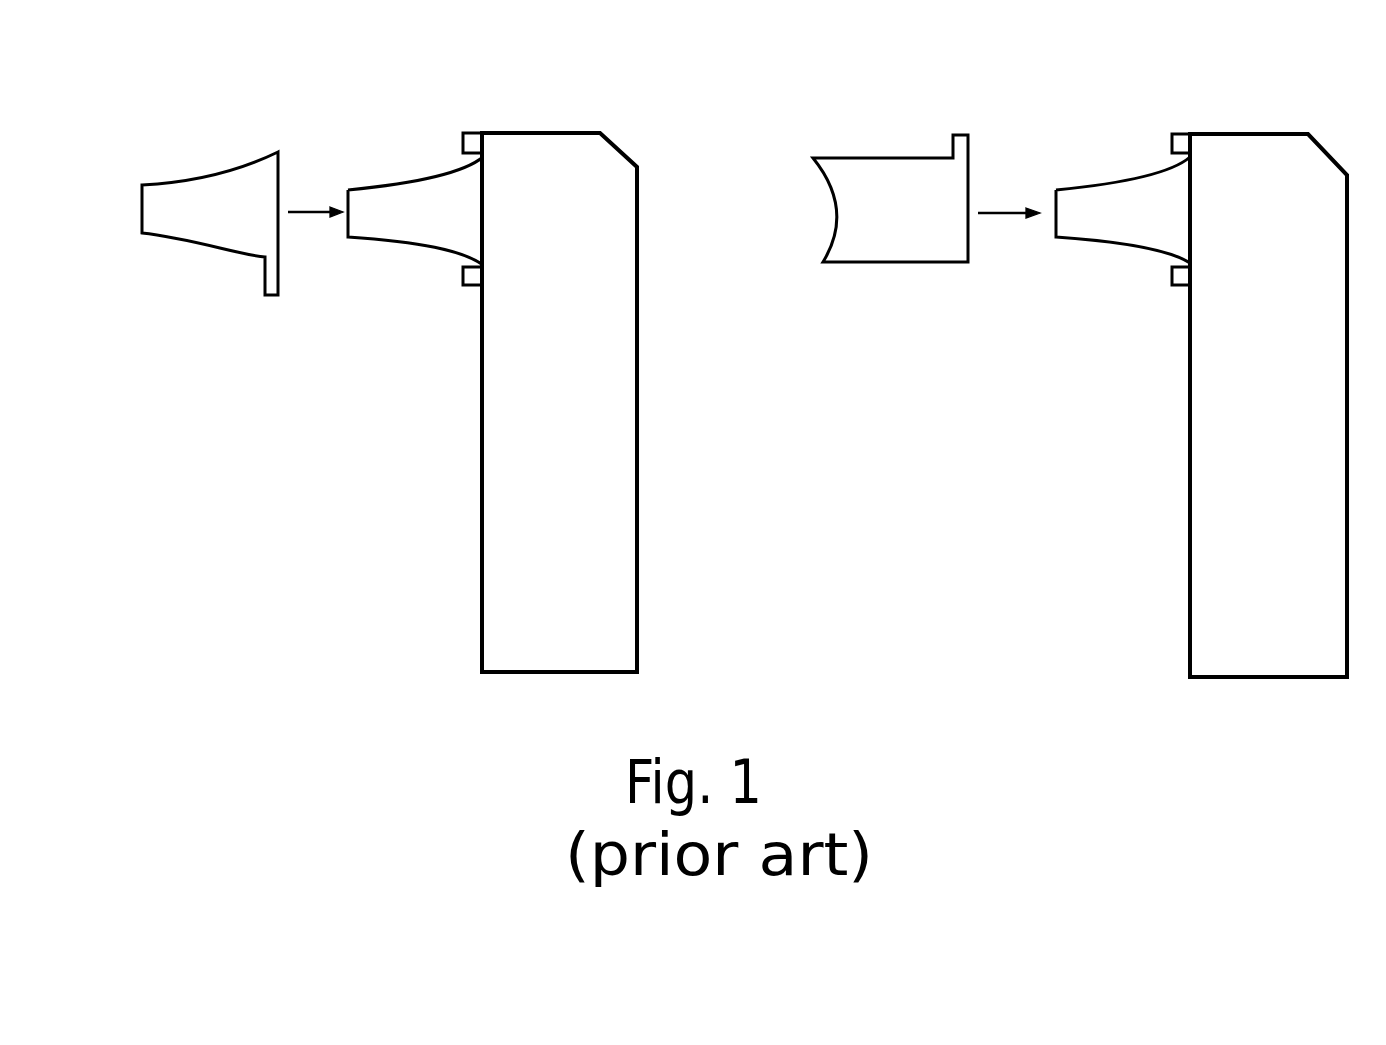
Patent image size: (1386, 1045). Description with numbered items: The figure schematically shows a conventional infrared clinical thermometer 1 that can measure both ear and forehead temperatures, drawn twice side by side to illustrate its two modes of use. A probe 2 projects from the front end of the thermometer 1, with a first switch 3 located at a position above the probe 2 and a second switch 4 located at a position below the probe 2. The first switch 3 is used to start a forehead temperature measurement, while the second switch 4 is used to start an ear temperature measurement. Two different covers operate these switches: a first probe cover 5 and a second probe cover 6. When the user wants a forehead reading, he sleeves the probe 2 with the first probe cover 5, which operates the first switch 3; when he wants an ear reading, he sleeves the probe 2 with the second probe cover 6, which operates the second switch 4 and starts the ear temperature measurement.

The infrared clinical thermometer 1 is at (637, 518).
The probe 2 is at (377, 240).
The first switch 3 is at (471, 133).
The second switch 4 is at (472, 287).
The first probe cover 5 is at (897, 262).
The second probe cover 6 is at (194, 238).